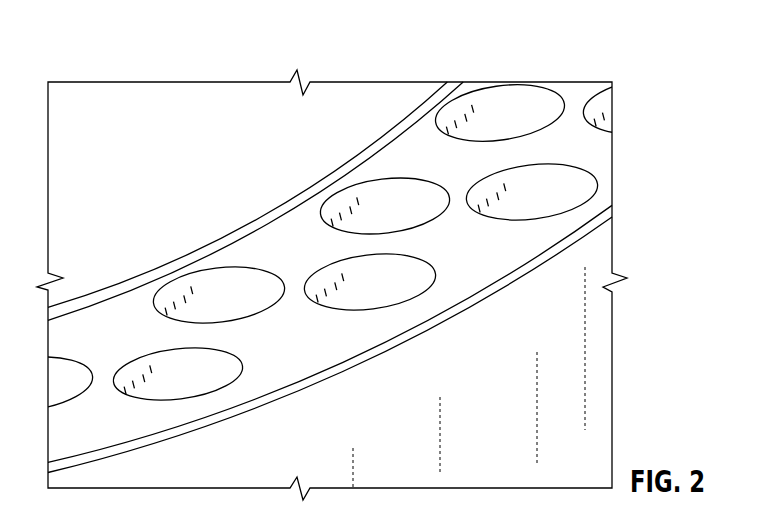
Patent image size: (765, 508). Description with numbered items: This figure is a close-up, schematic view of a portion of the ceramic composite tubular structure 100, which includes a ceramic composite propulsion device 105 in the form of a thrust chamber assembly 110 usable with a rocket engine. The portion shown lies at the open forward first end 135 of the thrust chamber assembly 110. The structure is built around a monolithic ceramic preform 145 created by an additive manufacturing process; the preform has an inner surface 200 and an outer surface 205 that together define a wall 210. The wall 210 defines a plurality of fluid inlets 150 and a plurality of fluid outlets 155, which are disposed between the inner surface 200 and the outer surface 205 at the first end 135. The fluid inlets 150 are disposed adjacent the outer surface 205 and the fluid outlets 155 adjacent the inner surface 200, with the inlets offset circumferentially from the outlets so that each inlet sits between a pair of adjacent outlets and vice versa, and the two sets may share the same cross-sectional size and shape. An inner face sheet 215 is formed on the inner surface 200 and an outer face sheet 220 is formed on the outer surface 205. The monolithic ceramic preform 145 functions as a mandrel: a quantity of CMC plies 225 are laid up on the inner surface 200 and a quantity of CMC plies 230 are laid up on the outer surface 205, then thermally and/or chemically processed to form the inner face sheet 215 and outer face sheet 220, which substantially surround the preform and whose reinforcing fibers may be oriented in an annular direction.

The ceramic composite tubular structure 100 is at (108, 171).
The ceramic composite propulsion device 105 is at (597, 315).
The thrust chamber assembly 110 is at (173, 192).
The first end 135 is at (241, 196).
The monolithic ceramic preform 145 is at (477, 83).
The fluid inlets 150 is at (570, 178).
The fluid outlets 155 is at (523, 100).
The inner surface 200 is at (363, 152).
The outer surface 205 is at (412, 329).
The wall 210 is at (430, 138).
The inner face sheet 215 is at (100, 279).
The outer face sheet 220 is at (513, 365).
The CMC plies 225 is at (362, 151).
The CMC plies 230 is at (180, 431).